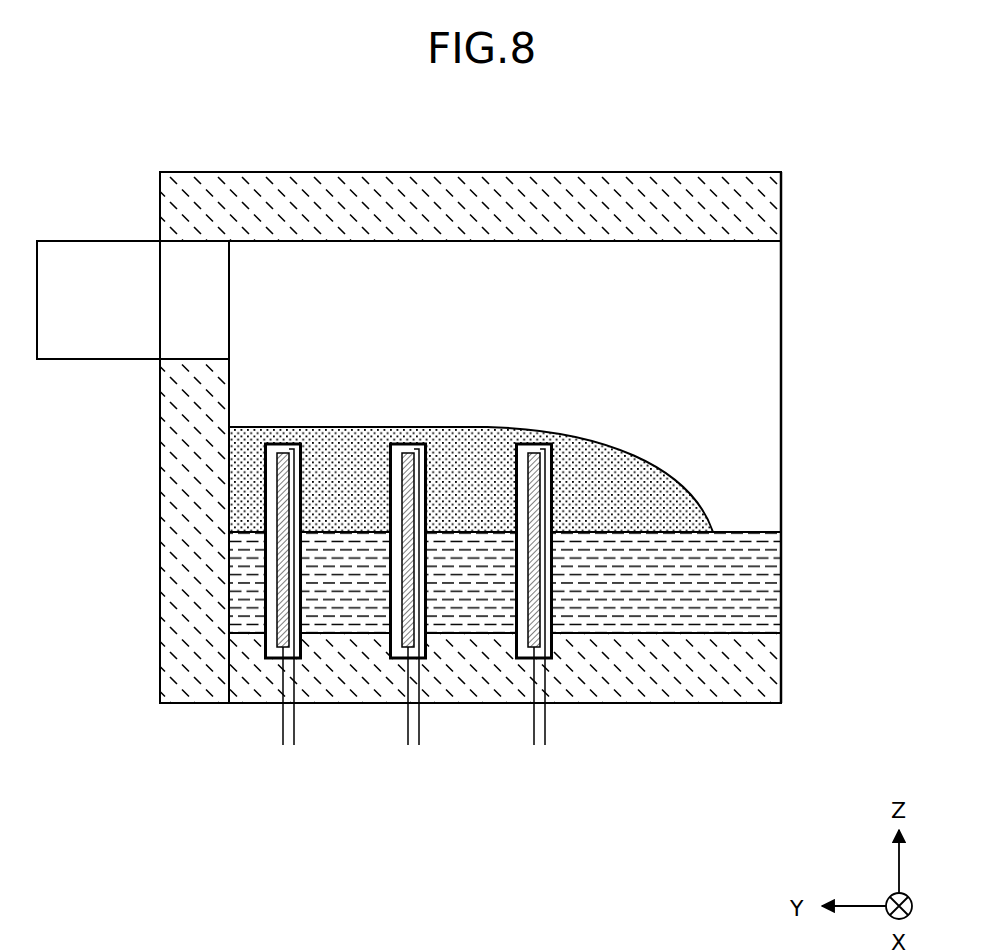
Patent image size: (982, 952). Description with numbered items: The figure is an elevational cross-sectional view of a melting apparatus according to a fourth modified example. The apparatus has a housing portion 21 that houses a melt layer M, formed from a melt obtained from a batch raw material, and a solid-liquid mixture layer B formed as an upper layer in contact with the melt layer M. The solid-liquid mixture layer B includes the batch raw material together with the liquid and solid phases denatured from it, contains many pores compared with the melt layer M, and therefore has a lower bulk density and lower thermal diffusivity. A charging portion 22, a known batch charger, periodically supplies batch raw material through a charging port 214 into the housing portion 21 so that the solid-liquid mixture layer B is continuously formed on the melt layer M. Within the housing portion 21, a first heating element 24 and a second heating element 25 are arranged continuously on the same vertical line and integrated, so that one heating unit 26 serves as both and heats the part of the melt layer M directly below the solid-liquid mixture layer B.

The housing portion 21 is at (150, 619).
The charging portion 22 is at (100, 258).
The charging port 214 is at (213, 294).
The first heating element 24 is at (265, 497).
The second heating element 25 is at (265, 572).
The heating unit 26 is at (282, 594).
The solid-liquid mixture layer B is at (467, 460).
The melt layer M is at (664, 617).